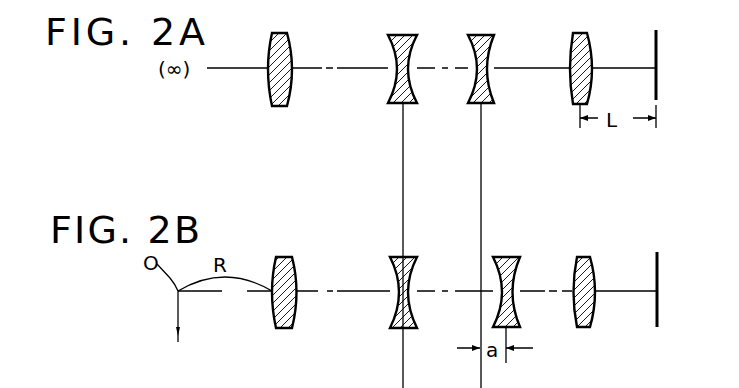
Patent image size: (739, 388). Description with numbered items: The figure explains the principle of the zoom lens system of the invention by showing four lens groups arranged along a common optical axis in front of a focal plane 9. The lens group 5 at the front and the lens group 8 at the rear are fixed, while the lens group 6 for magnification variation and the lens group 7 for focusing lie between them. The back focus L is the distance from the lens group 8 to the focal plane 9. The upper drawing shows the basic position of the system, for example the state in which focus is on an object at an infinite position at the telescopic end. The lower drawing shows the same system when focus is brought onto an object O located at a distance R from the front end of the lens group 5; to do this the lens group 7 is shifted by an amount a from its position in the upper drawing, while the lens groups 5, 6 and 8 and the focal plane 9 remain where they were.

In FIG. 2A, the lens group 5 is at (287, 36).
In FIG. 2B, the lens group 5 is at (284, 258).
In FIG. 2A, the lens group 6 is at (406, 36).
In FIG. 2B, the lens group 6 is at (408, 259).
In FIG. 2A, the lens group 7 is at (488, 36).
In FIG. 2B, the lens group 7 is at (508, 259).
In FIG. 2A, the lens group 8 is at (577, 33).
In FIG. 2B, the lens group 8 is at (580, 257).
In FIG. 2A, the focal plane 9 is at (656, 40).
In FIG. 2B, the focal plane 9 is at (657, 262).